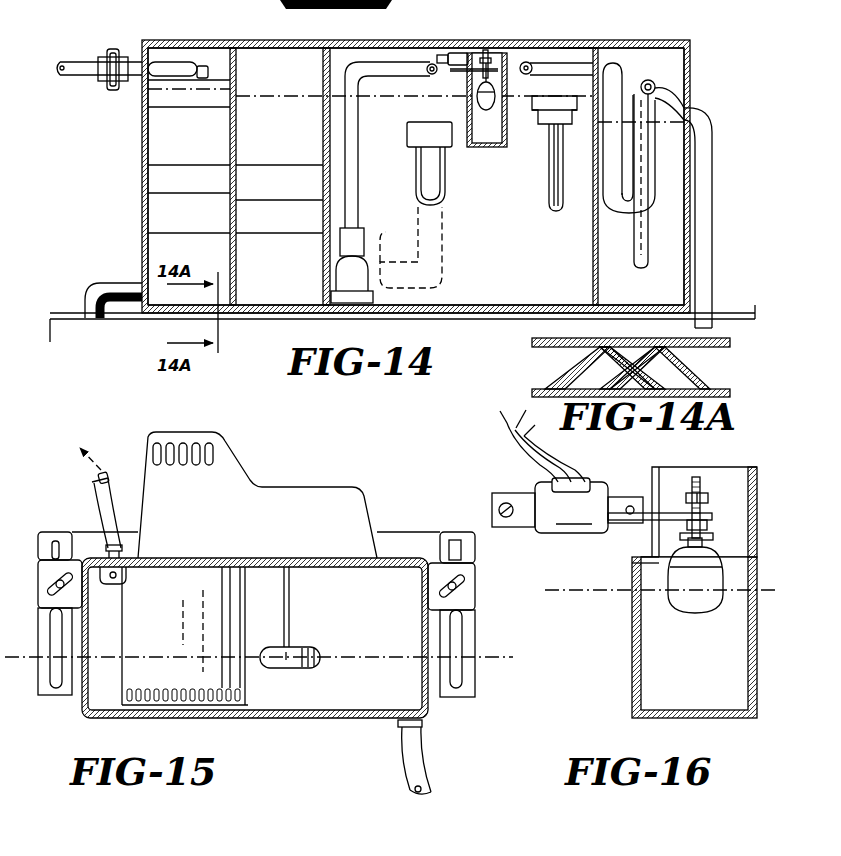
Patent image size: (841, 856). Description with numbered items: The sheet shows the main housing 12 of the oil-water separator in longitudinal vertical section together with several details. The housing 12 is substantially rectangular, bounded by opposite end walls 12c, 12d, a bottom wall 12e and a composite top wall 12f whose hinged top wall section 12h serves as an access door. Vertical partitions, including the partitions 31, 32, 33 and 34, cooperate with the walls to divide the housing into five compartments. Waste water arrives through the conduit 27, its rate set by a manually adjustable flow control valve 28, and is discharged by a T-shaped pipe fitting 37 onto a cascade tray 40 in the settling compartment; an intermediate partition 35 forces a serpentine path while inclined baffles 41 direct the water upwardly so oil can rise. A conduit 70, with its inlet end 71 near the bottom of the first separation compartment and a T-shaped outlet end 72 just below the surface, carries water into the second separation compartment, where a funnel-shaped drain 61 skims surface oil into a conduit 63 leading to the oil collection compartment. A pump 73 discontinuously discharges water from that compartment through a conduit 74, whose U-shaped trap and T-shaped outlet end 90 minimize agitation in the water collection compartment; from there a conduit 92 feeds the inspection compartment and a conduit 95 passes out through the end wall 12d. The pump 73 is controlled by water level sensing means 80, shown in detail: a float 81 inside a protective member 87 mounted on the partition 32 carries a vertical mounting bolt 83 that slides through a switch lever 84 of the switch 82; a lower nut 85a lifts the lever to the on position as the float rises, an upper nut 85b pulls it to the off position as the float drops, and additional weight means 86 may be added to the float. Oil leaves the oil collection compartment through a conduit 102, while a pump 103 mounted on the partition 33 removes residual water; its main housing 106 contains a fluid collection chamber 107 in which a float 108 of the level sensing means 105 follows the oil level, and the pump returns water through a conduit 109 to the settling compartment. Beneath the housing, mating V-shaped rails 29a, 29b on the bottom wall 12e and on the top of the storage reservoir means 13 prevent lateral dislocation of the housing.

In FIG. 14, the main housing 12 is at (694, 41).
In FIG. 14A, the main housing 12 is at (542, 352).
In FIG. 14, the hinged top wall section 12h is at (250, 42).
In FIG. 14, the end wall 12c is at (142, 149).
In FIG. 14, the end wall 12d is at (688, 108).
In FIG. 14, the bottom wall 12e is at (505, 309).
In FIG. 14A, the bottom wall 12e is at (618, 346).
In FIG. 14, the composite top wall 12f is at (568, 42).
In FIG. 14A, the storage reservoir means 13 is at (538, 393).
In FIG. 14, the conduit 27 is at (70, 68).
In FIG. 14, the flow control valve 28 is at (124, 50).
In FIG. 14, the T-shaped pipe fitting 37 is at (199, 64).
In FIG. 14, the cascade tray 40 is at (186, 101).
In FIG. 14, the baffles 41 is at (245, 178).
In FIG. 14, the intermediate partition 35 is at (238, 128).
In FIG. 14, the partition 34 is at (657, 62).
In FIG. 14, the partition 31 is at (323, 260).
In FIG. 14, the pump 73 is at (346, 278).
In FIG. 14, the conduit 74 is at (350, 177).
In FIG. 14, the outlet end 72 is at (411, 125).
In FIG. 14, the conduit 70 is at (432, 232).
In FIG. 14, the inlet end 71 is at (393, 243).
In FIG. 14, the float 81 is at (476, 95).
In FIG. 16, the float 81 is at (704, 614).
In FIG. 14, the protective member 87 is at (506, 147).
In FIG. 16, the protective member 87 is at (633, 674).
In FIG. 14, the switch 82 is at (455, 52).
In FIG. 16, the switch 82 is at (567, 471).
In FIG. 14, the water level sensing means 80 is at (497, 50).
In FIG. 16, the water level sensing means 80 is at (682, 496).
In FIG. 14, the drain 61 is at (537, 100).
In FIG. 14, the conduit 63 is at (553, 172).
In FIG. 14, the partition 32 is at (505, 258).
In FIG. 14, the partition 33 is at (596, 250).
In FIG. 14, the outlet end 90 is at (688, 114).
In FIG. 14, the conduit 92 is at (643, 244).
In FIG. 14, the conduit 95 is at (702, 280).
In FIG. 14, the conduit 102 is at (130, 290).
In FIG. 14A, the rail 29a is at (614, 340).
In FIG. 14, the rail 29b is at (70, 318).
In FIG. 14A, the rail 29b is at (700, 388).
In FIG. 15, the pump 103 is at (294, 480).
In FIG. 15, the conduit 109 is at (113, 510).
In FIG. 15, the fluid collection chamber 107 is at (360, 583).
In FIG. 15, the level sensing means 105 is at (318, 640).
In FIG. 15, the float 108 is at (290, 668).
In FIG. 15, the main housing 106 is at (322, 720).
In FIG. 16, the mounting bolt 83 is at (697, 477).
In FIG. 16, the nut 85b is at (704, 492).
In FIG. 16, the nut 85a is at (700, 529).
In FIG. 16, the switch lever 84 is at (641, 522).
In FIG. 16, the additional weight means 86 is at (680, 538).